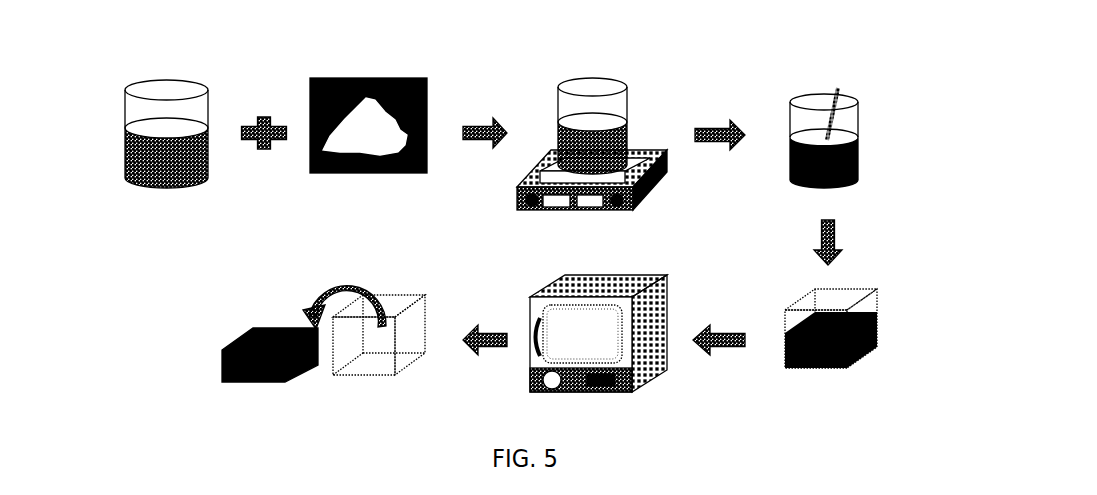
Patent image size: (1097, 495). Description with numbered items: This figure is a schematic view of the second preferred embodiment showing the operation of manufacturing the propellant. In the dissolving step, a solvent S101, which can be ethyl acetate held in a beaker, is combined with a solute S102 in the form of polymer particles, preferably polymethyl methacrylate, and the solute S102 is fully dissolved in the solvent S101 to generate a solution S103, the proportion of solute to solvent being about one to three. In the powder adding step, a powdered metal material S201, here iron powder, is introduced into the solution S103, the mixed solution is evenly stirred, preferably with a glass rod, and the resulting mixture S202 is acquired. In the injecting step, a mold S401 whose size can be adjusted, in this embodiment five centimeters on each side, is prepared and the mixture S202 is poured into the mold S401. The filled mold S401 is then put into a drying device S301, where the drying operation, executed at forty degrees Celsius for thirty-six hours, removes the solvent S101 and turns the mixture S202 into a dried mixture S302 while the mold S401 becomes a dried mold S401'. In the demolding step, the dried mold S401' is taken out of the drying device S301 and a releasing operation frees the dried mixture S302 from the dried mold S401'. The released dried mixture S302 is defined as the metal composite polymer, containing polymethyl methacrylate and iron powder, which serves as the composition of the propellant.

The solvent S101 is at (142, 153).
The solute S102 is at (312, 125).
The solution S103 is at (578, 123).
The powdered metal material S201 is at (730, 128).
The mixture S202 is at (860, 147).
The drying device S301 is at (660, 347).
The dried mixture S302 is at (248, 330).
The mold S401 is at (874, 296).
The dried mold S401' is at (389, 308).